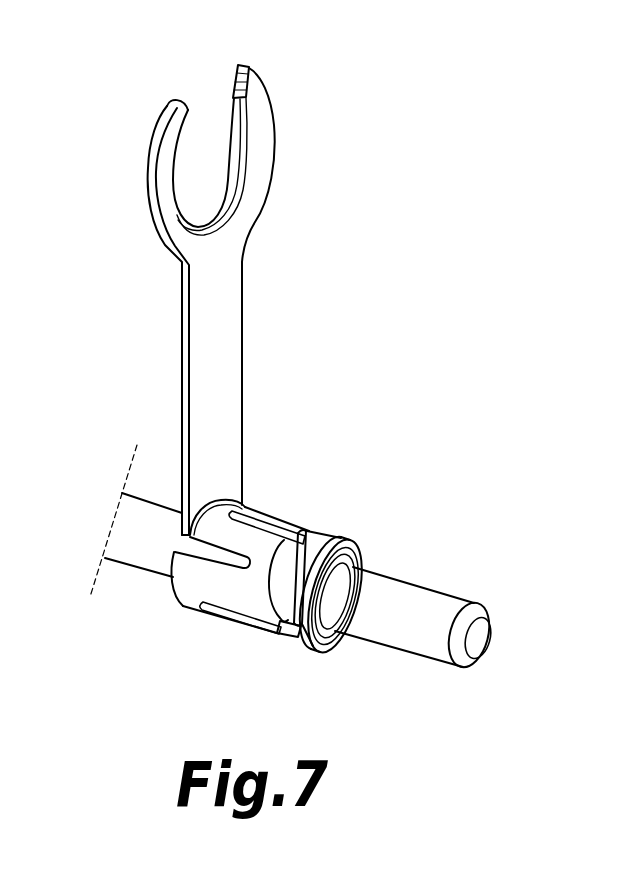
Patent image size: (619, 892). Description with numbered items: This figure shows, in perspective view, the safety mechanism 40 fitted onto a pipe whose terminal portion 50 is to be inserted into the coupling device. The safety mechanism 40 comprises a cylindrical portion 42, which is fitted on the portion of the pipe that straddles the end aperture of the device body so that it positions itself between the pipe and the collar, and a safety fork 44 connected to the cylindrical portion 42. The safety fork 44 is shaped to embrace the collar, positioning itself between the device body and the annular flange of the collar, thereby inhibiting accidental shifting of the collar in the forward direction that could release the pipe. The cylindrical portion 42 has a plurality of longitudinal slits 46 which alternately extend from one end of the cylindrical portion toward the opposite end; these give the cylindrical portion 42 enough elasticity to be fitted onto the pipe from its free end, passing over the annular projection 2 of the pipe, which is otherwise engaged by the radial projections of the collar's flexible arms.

The safety mechanism 40 is at (463, 342).
The safety fork 44 is at (242, 310).
The cylindrical portion 42 is at (245, 539).
The longitudinal slits 46 is at (219, 552).
The annular projection 2 is at (343, 540).
The terminal portion 50 is at (434, 580).